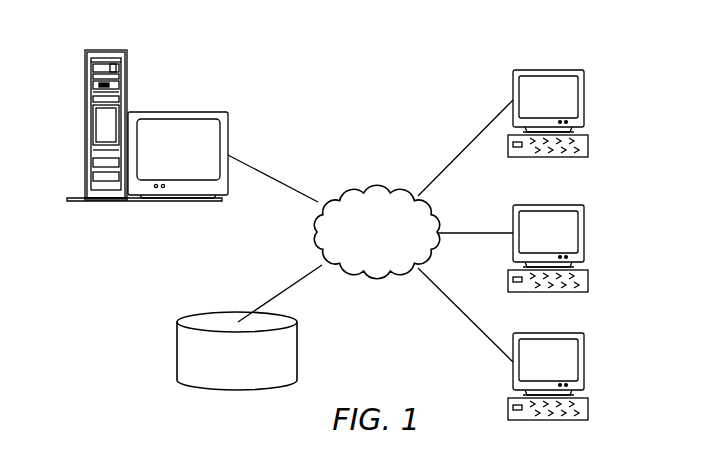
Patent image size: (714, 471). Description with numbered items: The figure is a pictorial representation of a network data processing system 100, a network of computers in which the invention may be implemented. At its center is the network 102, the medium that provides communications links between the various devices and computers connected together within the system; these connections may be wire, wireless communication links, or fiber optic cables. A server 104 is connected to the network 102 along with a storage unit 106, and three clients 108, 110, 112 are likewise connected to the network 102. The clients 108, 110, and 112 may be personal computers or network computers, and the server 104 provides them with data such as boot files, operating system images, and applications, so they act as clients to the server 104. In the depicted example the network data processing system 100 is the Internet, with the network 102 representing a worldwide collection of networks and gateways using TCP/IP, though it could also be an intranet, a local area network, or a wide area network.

The network data processing system 100 is at (424, 80).
The network 102 is at (350, 188).
The server 104 is at (85, 128).
The storage unit 106 is at (177, 350).
The client 108 is at (584, 100).
The client 110 is at (584, 234).
The client 112 is at (584, 365).